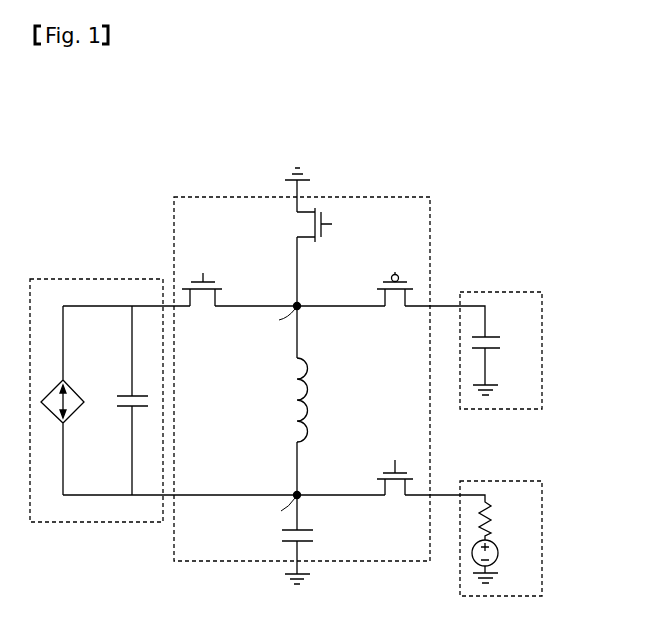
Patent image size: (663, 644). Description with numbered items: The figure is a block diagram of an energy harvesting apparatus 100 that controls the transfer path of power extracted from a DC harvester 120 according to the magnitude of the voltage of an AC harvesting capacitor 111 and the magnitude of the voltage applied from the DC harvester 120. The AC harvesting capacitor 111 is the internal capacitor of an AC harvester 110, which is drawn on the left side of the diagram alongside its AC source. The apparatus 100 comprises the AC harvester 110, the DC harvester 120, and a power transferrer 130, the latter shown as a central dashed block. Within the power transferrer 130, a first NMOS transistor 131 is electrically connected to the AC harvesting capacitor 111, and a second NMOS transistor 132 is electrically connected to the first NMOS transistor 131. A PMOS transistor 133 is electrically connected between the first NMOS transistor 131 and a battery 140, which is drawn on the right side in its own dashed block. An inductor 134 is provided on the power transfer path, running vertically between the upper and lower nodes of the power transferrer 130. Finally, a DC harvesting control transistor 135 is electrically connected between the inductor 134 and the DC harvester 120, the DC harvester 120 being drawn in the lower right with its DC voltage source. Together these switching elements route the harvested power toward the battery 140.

The energy harvesting apparatus 100 is at (311, 115).
The AC harvester 110 is at (100, 279).
The AC harvesting capacitor 111 is at (119, 409).
The DC harvester 120 is at (500, 481).
The power transferrer 130 is at (387, 197).
The first NMOS transistor 131 is at (206, 281).
The second NMOS transistor 132 is at (332, 224).
The PMOS transistor 133 is at (390, 280).
The inductor 134 is at (314, 391).
The DC harvesting control transistor 135 is at (389, 471).
The battery 140 is at (500, 292).